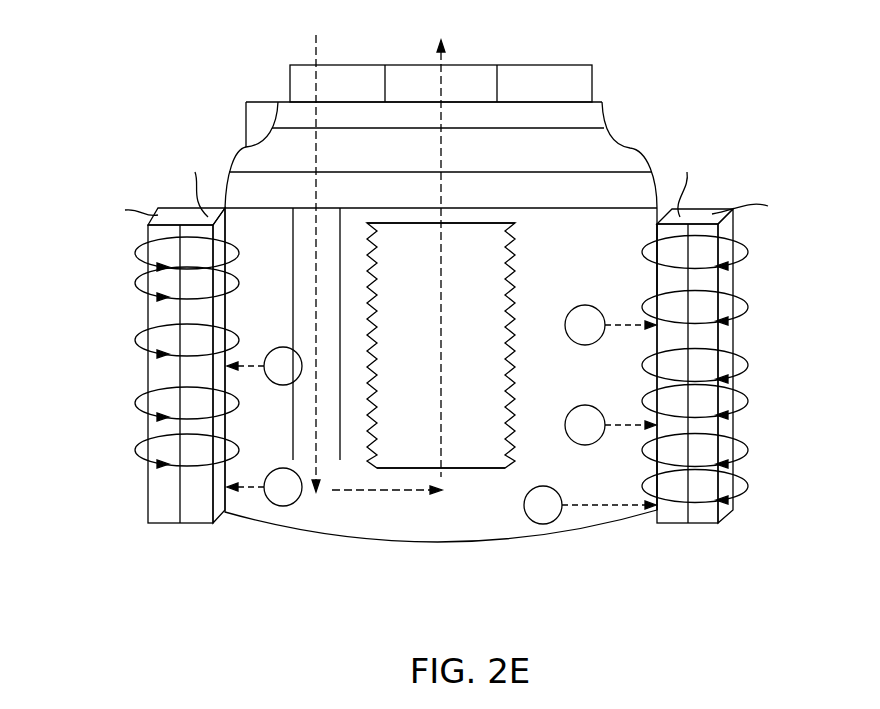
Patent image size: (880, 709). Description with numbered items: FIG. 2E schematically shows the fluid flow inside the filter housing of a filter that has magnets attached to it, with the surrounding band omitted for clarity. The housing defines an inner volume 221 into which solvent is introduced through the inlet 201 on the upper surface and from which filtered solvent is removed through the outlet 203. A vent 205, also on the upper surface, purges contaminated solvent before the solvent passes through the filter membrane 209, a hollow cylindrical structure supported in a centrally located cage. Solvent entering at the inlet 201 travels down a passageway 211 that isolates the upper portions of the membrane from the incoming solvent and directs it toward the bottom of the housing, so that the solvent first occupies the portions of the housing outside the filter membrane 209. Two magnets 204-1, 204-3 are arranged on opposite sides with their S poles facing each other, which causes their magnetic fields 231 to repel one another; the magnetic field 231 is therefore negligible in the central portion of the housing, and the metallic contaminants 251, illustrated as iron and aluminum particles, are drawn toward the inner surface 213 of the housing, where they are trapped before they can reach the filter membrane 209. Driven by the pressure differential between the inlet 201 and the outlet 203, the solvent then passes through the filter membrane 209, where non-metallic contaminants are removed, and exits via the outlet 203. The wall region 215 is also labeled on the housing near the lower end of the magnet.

The inlet 201 is at (367, 248).
The outlet 203 is at (441, 240).
The vent 205 is at (552, 75).
The filter membrane 209 is at (473, 458).
The passageway 211 is at (340, 380).
The inner surface 213 is at (650, 277).
The lower wall 215 is at (657, 480).
The inner volume 221 is at (634, 226).
The magnetic field 231 is at (135, 450).
The magnet 204-1 is at (725, 426).
The magnet 204-3 is at (148, 502).
The metallic contaminants 251 is at (277, 348).